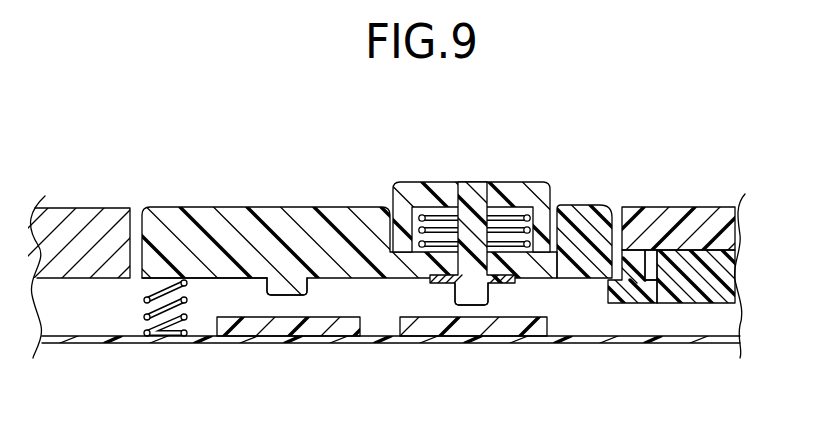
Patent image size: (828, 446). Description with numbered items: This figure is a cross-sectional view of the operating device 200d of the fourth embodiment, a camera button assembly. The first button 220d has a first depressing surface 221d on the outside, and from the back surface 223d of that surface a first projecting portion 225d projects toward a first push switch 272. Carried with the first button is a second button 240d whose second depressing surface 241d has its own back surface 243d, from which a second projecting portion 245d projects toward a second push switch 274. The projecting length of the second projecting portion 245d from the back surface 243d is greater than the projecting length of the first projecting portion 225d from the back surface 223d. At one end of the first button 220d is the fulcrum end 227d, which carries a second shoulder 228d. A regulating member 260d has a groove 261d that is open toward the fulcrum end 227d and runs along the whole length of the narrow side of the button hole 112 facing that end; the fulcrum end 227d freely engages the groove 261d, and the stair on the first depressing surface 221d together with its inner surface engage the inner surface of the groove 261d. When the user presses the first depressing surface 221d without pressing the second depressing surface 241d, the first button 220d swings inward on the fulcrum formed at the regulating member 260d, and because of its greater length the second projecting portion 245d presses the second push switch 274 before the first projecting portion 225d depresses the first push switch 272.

The operating device 200d is at (578, 160).
The first button 220d is at (347, 190).
The first depressing surface 221d is at (255, 203).
The back surface 223d is at (217, 287).
The first projecting portion 225d is at (293, 292).
The second button 240d is at (530, 175).
The second depressing surface 241d is at (424, 182).
The back surface 243d is at (462, 212).
The second projecting portion 245d is at (471, 301).
The fulcrum end 227d is at (628, 243).
The second shoulder 228d is at (668, 235).
The regulating member 260d is at (627, 292).
The groove 261d is at (705, 300).
The button hole 112 is at (607, 197).
The first push switch 272 is at (248, 340).
The second push switch 274 is at (530, 334).